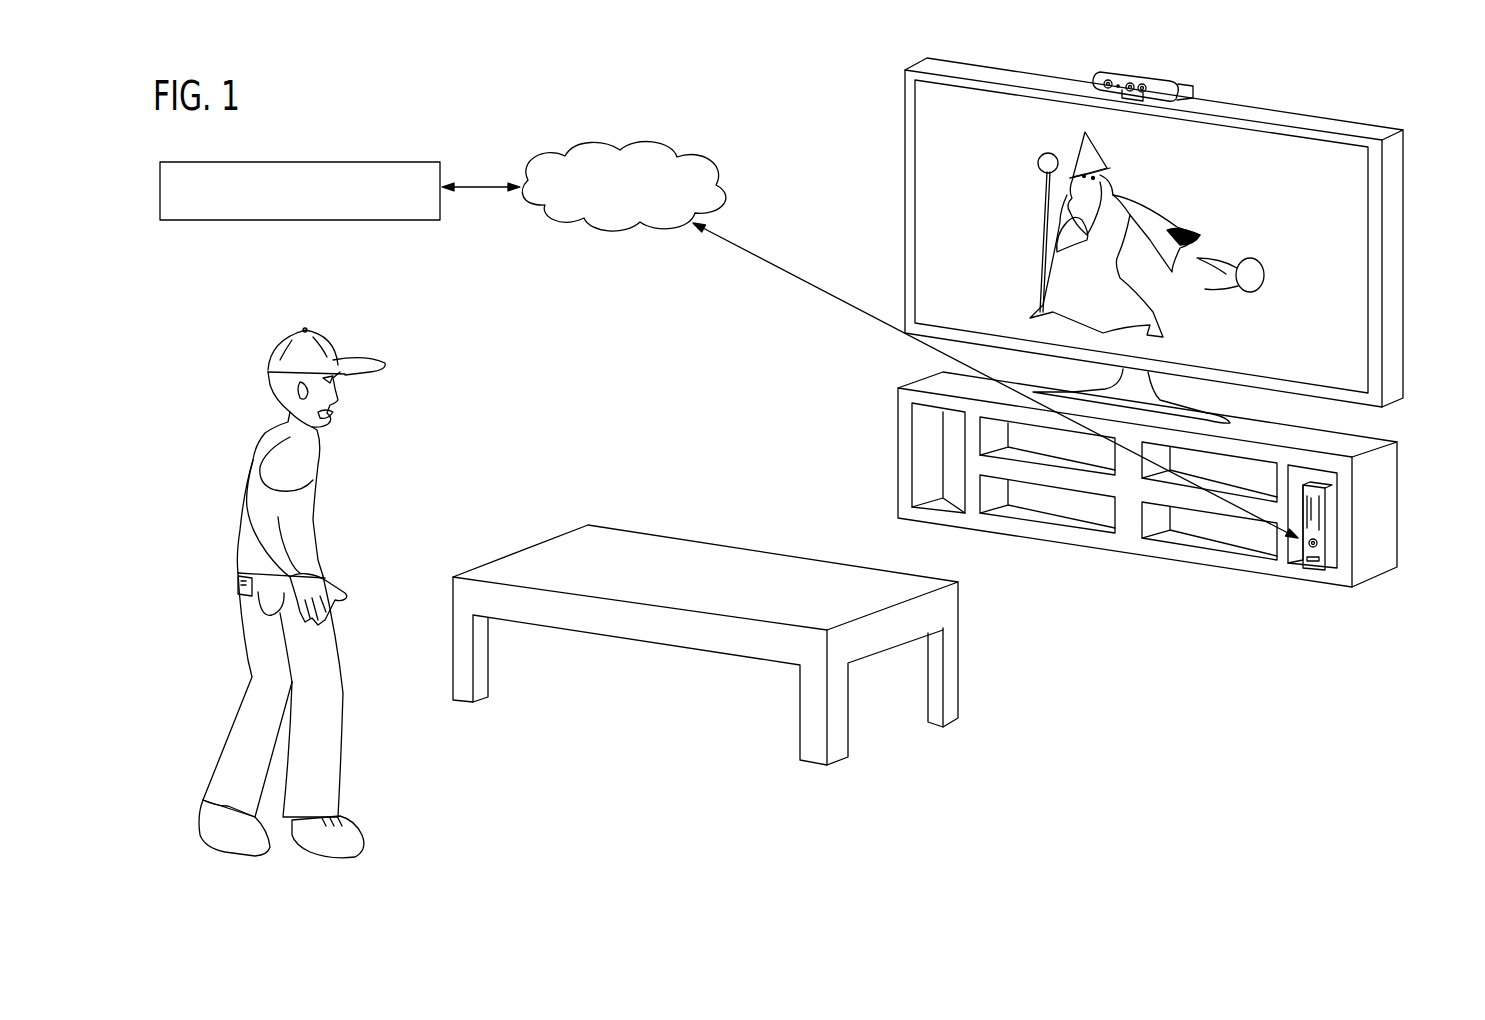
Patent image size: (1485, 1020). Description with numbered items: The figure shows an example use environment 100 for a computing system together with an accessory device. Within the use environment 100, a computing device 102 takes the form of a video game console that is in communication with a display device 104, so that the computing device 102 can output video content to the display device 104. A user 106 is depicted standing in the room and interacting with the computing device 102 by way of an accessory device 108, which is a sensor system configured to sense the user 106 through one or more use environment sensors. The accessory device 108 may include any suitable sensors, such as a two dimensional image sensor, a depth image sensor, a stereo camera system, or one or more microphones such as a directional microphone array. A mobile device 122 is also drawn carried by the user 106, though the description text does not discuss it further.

The use environment 100 is at (767, 111).
The computing device 102 is at (1312, 569).
The display device 104 is at (1283, 122).
The user 106 is at (262, 457).
The accessory device 108 is at (1194, 86).
The mobile device 122 is at (238, 583).